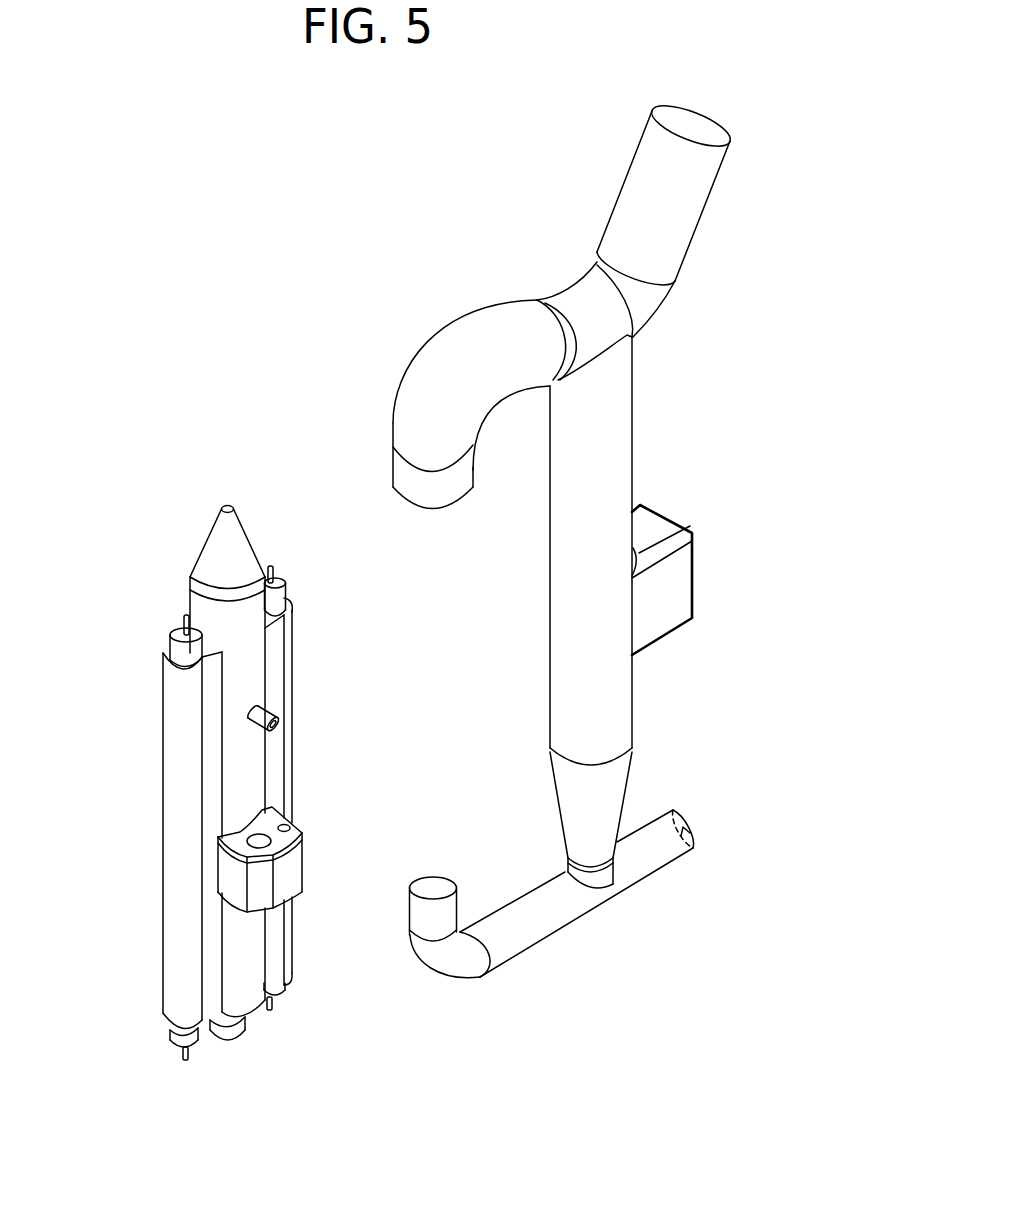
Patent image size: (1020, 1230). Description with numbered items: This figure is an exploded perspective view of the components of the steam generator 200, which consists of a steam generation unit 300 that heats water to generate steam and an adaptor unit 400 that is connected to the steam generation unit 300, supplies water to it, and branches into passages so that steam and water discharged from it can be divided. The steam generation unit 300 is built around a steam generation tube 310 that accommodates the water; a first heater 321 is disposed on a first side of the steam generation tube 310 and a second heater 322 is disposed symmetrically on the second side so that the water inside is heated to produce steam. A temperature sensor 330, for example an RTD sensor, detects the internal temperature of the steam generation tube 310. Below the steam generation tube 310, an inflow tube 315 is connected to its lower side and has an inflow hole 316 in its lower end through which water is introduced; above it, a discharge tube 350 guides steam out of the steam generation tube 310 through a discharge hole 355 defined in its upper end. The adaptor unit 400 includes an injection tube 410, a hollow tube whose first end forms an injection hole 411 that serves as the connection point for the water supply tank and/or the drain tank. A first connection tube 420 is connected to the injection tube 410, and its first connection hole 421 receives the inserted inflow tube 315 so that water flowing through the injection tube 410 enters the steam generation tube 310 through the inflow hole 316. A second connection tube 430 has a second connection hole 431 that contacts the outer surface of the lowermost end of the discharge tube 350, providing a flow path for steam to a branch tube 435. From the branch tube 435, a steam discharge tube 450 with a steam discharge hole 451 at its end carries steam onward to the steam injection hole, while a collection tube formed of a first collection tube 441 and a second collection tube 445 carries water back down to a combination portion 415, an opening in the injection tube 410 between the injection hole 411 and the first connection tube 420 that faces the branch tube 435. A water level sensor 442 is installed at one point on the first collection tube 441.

The steam generator 200 is at (116, 218).
The steam generation unit 300 is at (165, 548).
The steam generation tube 310 is at (248, 675).
The inflow tube 315 is at (237, 1017).
The inflow hole 316 is at (227, 1040).
The first heater 321 is at (180, 718).
The second heater 322 is at (293, 642).
The temperature sensor 330 is at (297, 863).
The discharge tube 350 is at (244, 536).
The discharge hole 355 is at (226, 505).
The adaptor unit 400 is at (457, 236).
The injection tube 410 is at (555, 917).
The injection hole 411 is at (700, 832).
The combination portion 415 is at (605, 876).
The first connection tube 420 is at (450, 962).
The first connection hole 421 is at (442, 896).
The second connection tube 430 is at (420, 387).
The second connection hole 431 is at (452, 505).
The branch tube 435 is at (572, 290).
The first collection tube 441 is at (613, 433).
The water level sensor 442 is at (662, 580).
The second collection tube 445 is at (610, 782).
The steam discharge tube 450 is at (688, 205).
The steam discharge hole 451 is at (695, 125).